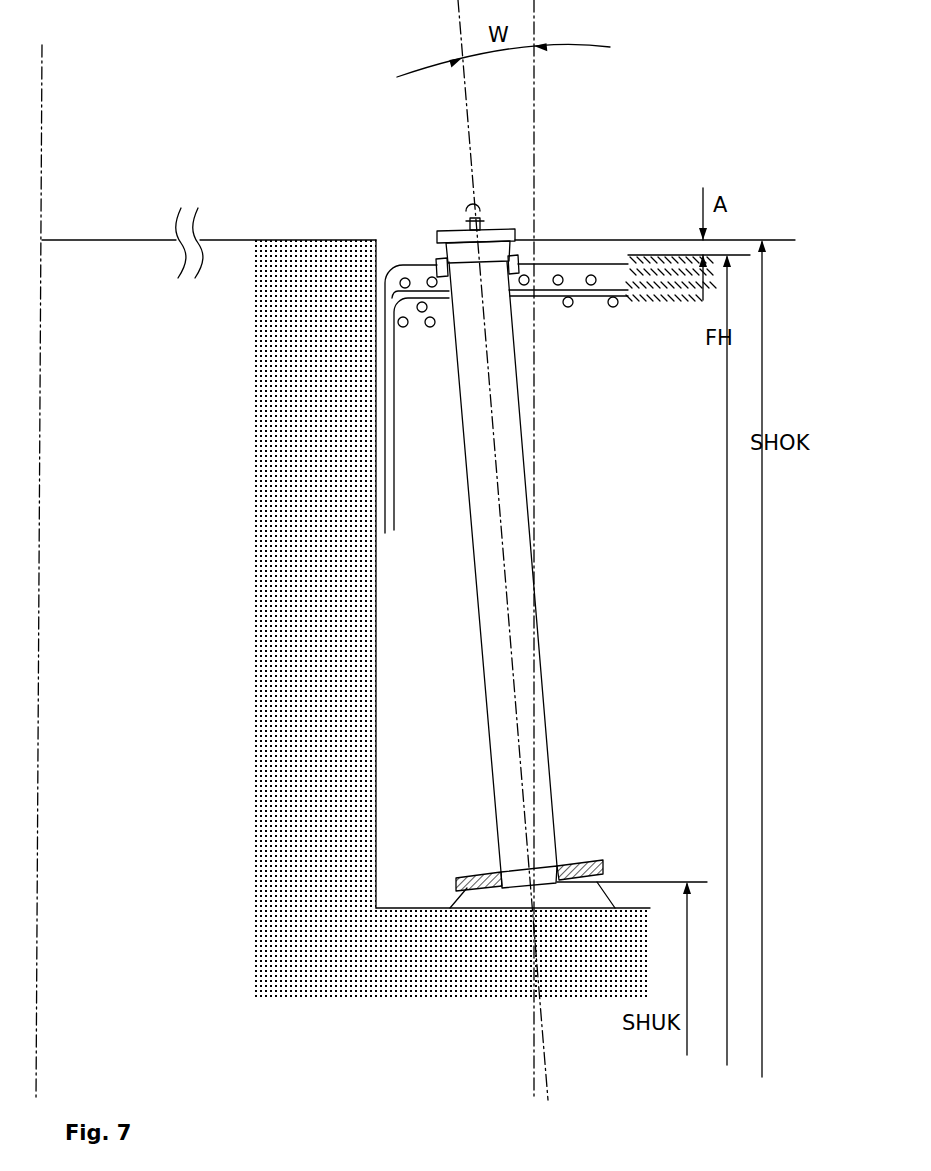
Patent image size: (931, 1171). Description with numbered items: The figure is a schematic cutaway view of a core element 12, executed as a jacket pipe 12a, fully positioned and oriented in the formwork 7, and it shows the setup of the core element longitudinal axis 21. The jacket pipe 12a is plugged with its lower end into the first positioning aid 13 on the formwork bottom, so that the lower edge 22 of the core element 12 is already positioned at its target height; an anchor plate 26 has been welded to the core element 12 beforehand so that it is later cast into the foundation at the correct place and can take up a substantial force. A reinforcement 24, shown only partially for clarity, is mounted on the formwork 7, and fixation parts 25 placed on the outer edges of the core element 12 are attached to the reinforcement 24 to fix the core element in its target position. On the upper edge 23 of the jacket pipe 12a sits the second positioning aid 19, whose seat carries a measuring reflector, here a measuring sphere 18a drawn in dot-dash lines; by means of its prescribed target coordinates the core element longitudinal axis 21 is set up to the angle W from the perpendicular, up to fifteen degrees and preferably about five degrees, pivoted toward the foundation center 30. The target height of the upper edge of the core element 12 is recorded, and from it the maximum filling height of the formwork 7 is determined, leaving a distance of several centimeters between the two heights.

The formwork 7 is at (276, 258).
The core element 12 is at (564, 575).
The jacket pipe 12a is at (542, 668).
The first positioning aid 13 is at (472, 907).
The measuring sphere 18a is at (463, 207).
The second positioning aid 19 is at (501, 230).
The core element longitudinal axis 21 is at (458, 20).
The lower edge 22 is at (565, 870).
The upper edge 23 is at (509, 242).
The reinforcement 24 is at (597, 270).
The fixation parts 25 is at (438, 260).
The anchor plate 26 is at (477, 877).
The foundation center 30 is at (42, 148).